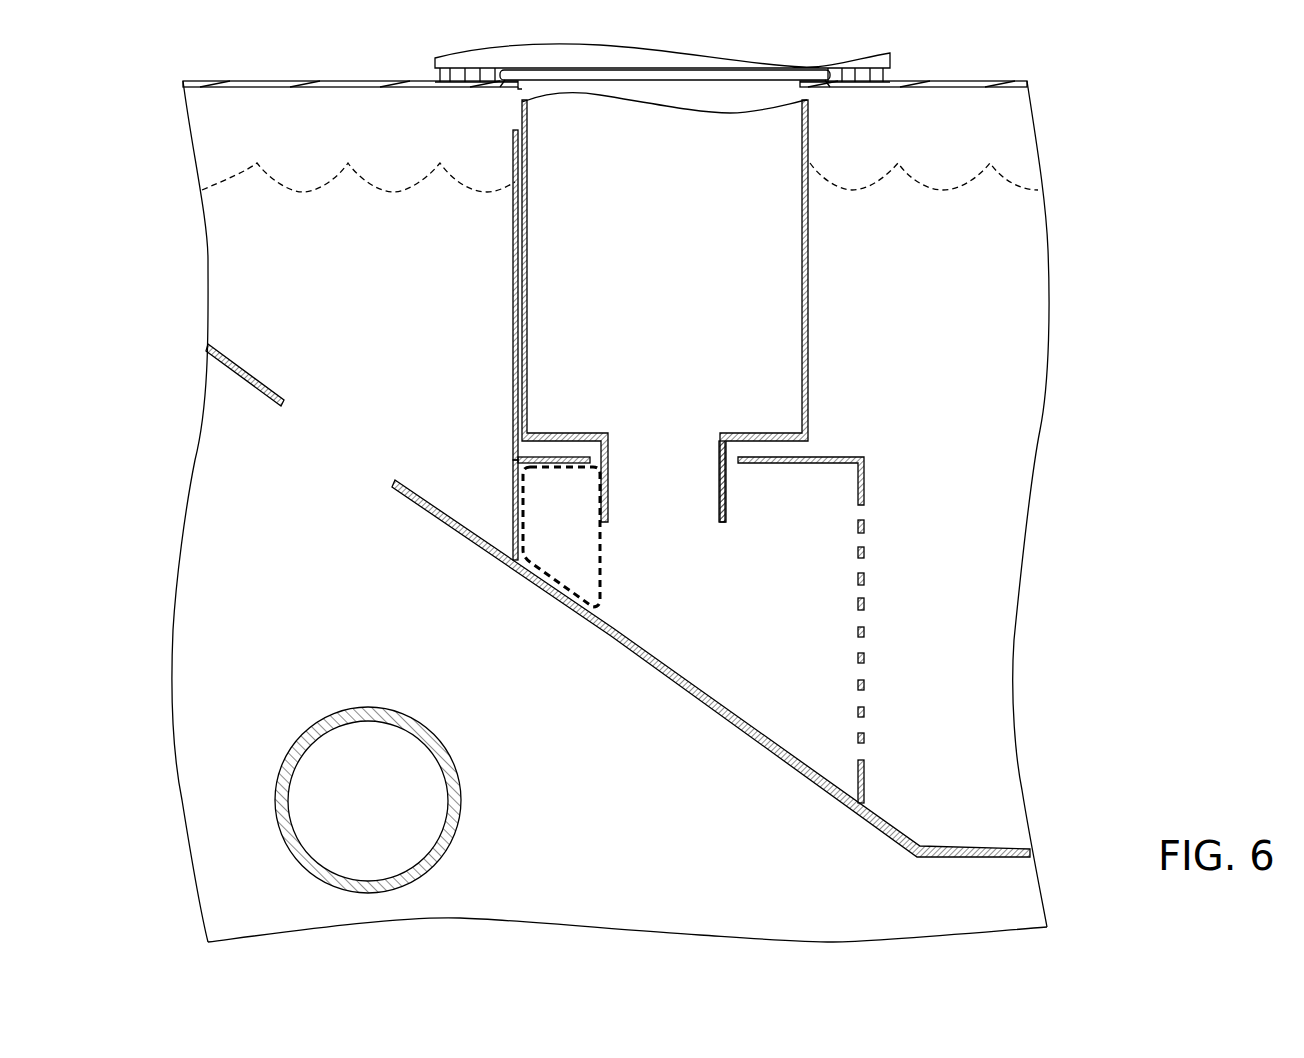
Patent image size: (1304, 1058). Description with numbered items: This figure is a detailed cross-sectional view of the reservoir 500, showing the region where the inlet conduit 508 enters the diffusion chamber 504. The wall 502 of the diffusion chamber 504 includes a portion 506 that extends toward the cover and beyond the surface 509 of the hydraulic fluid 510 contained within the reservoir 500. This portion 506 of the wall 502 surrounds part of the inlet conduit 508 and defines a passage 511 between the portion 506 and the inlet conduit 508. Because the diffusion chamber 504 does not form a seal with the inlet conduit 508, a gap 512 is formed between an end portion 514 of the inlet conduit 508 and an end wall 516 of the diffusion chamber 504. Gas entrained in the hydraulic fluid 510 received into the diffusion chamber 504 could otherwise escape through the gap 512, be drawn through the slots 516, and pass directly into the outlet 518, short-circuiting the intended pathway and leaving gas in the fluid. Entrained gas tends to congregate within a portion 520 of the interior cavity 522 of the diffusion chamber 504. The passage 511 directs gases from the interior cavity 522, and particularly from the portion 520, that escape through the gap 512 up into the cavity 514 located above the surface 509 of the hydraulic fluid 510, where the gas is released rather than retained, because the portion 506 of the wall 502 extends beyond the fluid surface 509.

The reservoir 500 is at (1103, 67).
The wall 502 is at (479, 489).
The diffusion chamber 504 is at (513, 493).
The portion of the wall 506 is at (515, 308).
The inlet conduit 508 is at (297, 81).
The surface of the hydraulic fluid 509 is at (920, 170).
The hydraulic fluid 510 is at (337, 287).
The passage 511 is at (527, 203).
The gap 512 is at (732, 460).
The end portion of the inlet conduit 514 is at (337, 138).
The end wall of the diffusion chamber 516 is at (332, 437).
The outlet 518 is at (422, 725).
The portion of the interior cavity 520 is at (602, 572).
The interior cavity 522 is at (822, 697).